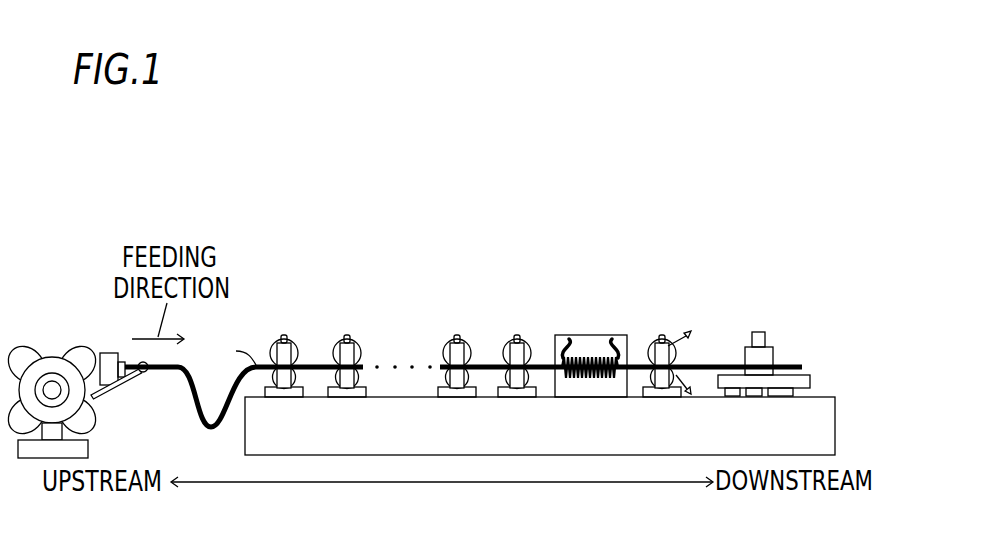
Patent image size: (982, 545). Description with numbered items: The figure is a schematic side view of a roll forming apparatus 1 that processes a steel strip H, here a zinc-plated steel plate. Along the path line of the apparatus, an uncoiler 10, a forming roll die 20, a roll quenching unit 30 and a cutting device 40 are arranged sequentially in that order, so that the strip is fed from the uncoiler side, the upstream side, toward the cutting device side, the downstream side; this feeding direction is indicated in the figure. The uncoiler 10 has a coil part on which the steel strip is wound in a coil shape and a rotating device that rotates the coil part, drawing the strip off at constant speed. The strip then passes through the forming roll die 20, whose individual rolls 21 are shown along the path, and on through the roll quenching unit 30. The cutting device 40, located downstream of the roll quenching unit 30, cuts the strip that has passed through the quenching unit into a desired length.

The roll forming apparatus 1 is at (398, 207).
The uncoiler 10 is at (53, 329).
The forming roll die 20 is at (543, 277).
The feed roller 21 is at (282, 327).
The roll quenching unit 30 is at (703, 313).
The cutting device 40 is at (755, 319).